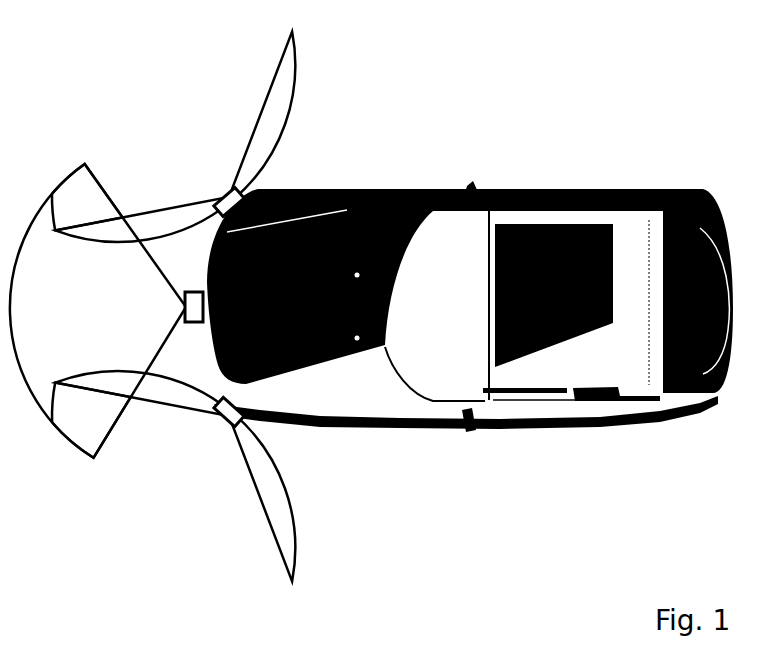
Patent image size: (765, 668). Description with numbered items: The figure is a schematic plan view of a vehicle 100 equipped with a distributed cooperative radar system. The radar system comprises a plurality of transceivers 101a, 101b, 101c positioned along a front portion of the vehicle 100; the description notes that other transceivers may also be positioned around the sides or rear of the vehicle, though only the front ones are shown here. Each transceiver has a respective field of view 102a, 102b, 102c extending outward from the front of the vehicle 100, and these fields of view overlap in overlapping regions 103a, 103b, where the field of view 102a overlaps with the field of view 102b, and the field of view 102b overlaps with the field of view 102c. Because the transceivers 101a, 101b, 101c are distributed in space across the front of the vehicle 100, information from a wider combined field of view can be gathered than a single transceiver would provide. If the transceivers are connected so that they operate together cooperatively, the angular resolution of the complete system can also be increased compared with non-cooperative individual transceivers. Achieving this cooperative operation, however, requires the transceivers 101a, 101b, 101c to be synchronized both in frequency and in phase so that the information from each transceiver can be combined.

The vehicle 100 is at (470, 283).
The transceiver 101a is at (261, 186).
The transceiver 101b is at (176, 271).
The transceiver 101c is at (260, 434).
The field of view 102a is at (198, 130).
The field of view 102b is at (109, 309).
The field of view 102c is at (189, 507).
The overlapping region 103a is at (111, 211).
The overlapping region 103b is at (109, 421).